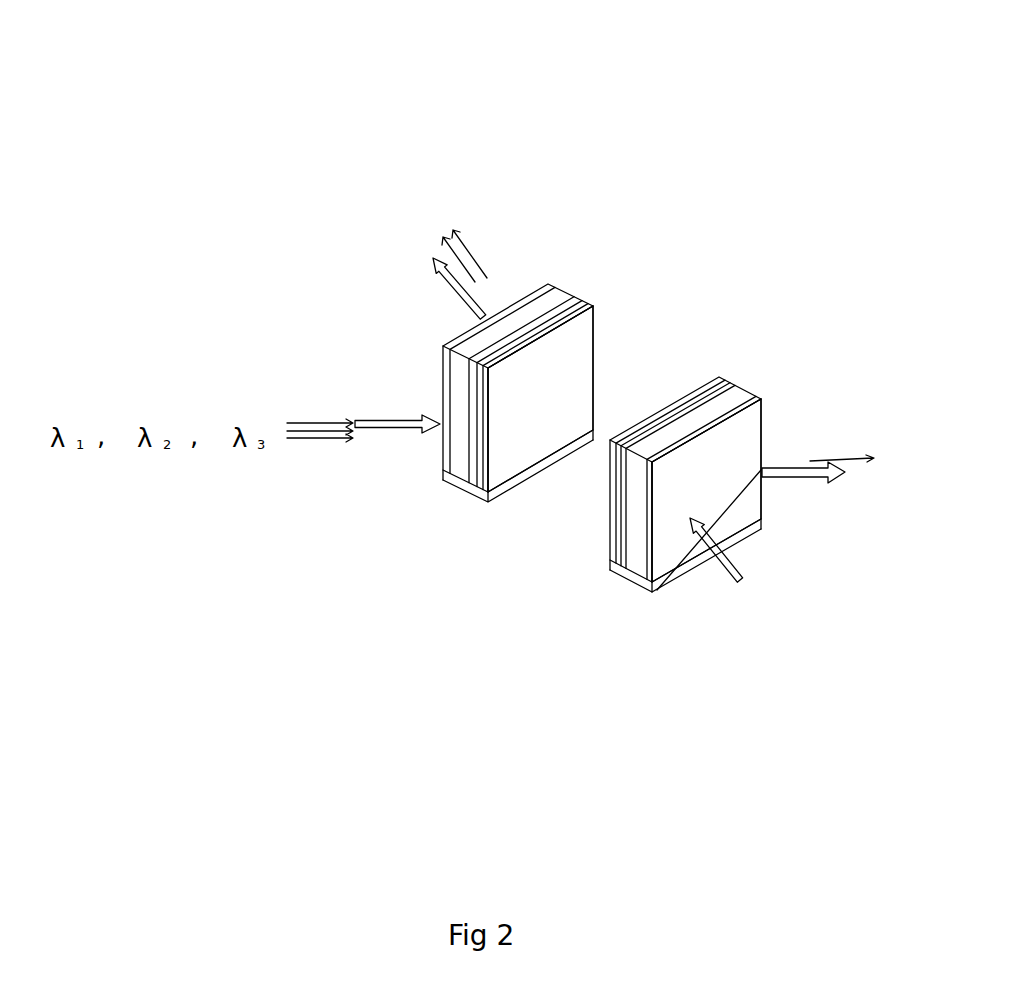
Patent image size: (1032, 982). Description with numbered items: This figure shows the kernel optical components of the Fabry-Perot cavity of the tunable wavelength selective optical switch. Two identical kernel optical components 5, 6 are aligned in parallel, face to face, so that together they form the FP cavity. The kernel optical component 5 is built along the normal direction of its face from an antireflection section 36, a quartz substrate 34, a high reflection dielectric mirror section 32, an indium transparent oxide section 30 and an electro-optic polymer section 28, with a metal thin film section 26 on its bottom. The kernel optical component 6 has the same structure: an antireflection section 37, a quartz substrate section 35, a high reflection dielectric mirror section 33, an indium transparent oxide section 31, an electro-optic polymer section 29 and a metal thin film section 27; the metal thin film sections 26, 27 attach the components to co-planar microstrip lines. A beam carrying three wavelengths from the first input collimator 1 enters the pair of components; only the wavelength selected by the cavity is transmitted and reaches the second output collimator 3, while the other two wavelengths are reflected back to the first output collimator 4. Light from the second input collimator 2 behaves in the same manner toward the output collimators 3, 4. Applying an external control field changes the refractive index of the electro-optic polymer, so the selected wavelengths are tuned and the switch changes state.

The first input collimator 1 is at (358, 437).
The second input collimator 2 is at (762, 468).
The second output collimator 3 is at (797, 467).
The first output collimator 4 is at (437, 268).
The kernel optical component 5 is at (712, 18).
The kernel optical component 6 is at (450, 545).
The metal thin film section 26 is at (594, 435).
The metal thin film section 27 is at (655, 598).
The electro-optic polymer section 28 is at (591, 305).
The electro-optic polymer section 29 is at (612, 562).
The indium transparent oxide section 30 is at (584, 301).
The indium transparent oxide section 31 is at (620, 566).
The high reflection dielectric mirror section 32 is at (579, 299).
The high reflection dielectric mirror section 33 is at (628, 570).
The substrate 34 is at (561, 290).
The quartz substrate section 35 is at (641, 577).
The antireflection section 36 is at (541, 287).
The antireflection section 37 is at (650, 582).